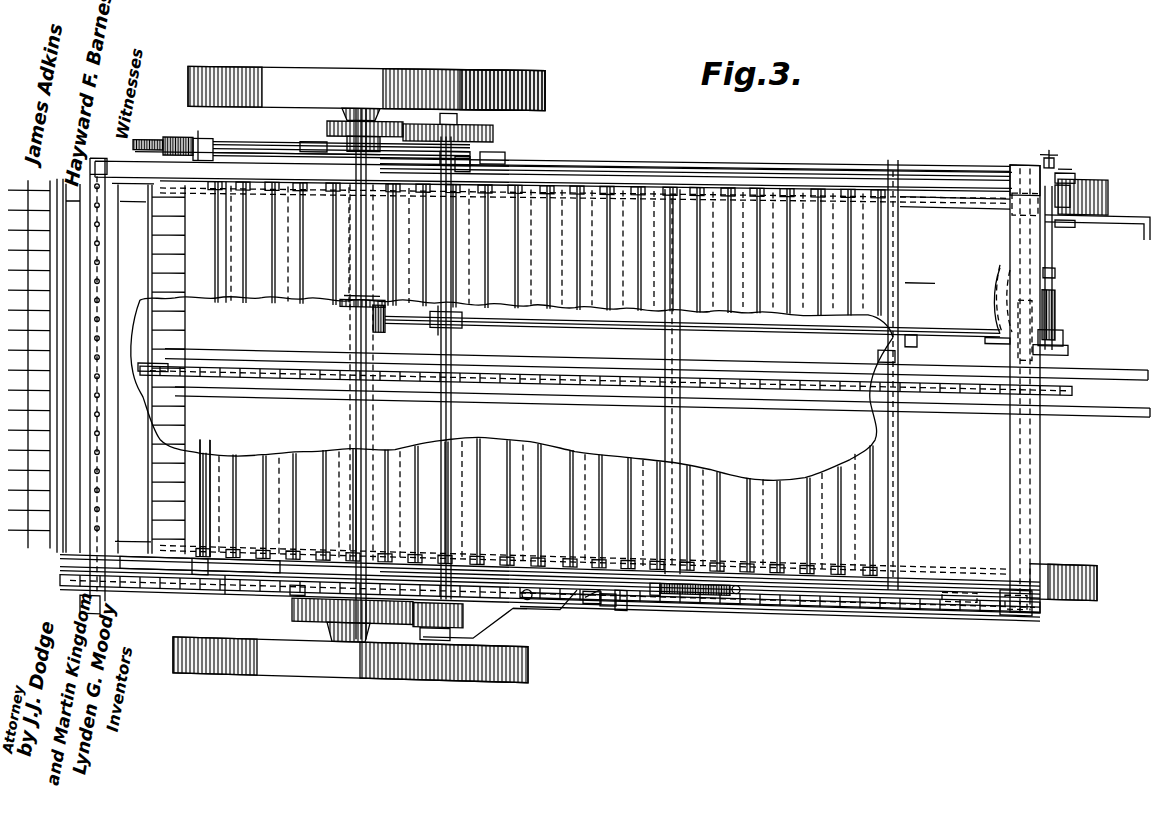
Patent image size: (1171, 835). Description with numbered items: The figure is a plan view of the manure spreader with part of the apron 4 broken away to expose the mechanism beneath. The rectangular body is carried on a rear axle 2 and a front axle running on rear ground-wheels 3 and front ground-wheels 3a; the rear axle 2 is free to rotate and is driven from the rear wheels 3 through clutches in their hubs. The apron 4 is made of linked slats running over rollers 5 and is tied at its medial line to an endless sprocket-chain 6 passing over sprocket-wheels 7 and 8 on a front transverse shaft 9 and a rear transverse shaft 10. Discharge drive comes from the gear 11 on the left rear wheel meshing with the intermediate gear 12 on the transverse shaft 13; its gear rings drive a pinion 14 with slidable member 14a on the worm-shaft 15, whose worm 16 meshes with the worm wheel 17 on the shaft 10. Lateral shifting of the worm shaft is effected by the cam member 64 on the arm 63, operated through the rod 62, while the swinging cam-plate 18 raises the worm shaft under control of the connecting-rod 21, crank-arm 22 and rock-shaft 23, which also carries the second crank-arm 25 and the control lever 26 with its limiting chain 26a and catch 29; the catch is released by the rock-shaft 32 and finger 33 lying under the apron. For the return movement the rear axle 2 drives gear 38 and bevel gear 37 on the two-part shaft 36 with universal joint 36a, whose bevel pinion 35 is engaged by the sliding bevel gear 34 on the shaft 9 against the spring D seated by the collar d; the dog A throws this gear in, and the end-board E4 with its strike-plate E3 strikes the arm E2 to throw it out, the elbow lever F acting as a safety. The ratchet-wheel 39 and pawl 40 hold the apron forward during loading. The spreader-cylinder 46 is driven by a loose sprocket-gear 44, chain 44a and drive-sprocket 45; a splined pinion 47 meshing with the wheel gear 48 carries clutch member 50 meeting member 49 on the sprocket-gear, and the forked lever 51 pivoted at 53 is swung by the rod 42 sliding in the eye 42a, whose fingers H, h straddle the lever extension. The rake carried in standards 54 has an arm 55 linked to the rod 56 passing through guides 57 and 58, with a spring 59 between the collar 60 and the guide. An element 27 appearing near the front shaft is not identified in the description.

The rear axle 2 is at (350, 323).
The rear ground-wheels 3 is at (340, 66).
The front ground-wheels 3a is at (1095, 160).
The apron 4 is at (484, 354).
The rollers 5 is at (952, 542).
The endless sprocket-chain 6 is at (862, 376).
The sprocket-wheel 7 is at (1078, 365).
The sprocket-wheel 8 is at (150, 370).
The front transverse shaft 9 is at (1055, 228).
The rear transverse shaft 10 is at (170, 308).
The gear 11 is at (327, 122).
The intermediate gear 12 is at (495, 128).
The transverse shaft 13 is at (452, 418).
The pinion 14 is at (395, 178).
The slidable member 14a is at (300, 168).
The worm-shaft 15 is at (258, 140).
The worm 16 is at (175, 134).
The worm wheel 17 is at (136, 138).
The swinging cam-plate 18 is at (212, 138).
The connecting-rod 21 is at (925, 157).
The crank-arm 22 is at (1015, 150).
The transverse rock-shaft 23 is at (1030, 492).
The second crank-arm 25 is at (1015, 580).
The manually-operated lever 26 is at (1148, 190).
The chain 26a is at (1075, 202).
The bearing block 27 is at (1010, 197).
The catch 29 is at (1068, 170).
The horizontal transverse rock-shaft 32 is at (905, 253).
The depending finger 33 is at (878, 336).
The bevel gear 34 is at (1068, 326).
The bevel pinion 35 is at (1008, 285).
The longitudinal two-part shaft 36 is at (635, 316).
The universal joint 36a is at (460, 316).
The bevel gear 37 is at (380, 324).
The gear 38 is at (340, 295).
The ratchet-wheel 39 is at (1070, 150).
The pivoted pawl 40 is at (1050, 133).
The connecting-rod 42 is at (878, 580).
The eye 42a is at (624, 593).
The loose sprocket-gear 44 is at (505, 560).
The chain 44a is at (238, 584).
The drive-sprocket 45 is at (90, 606).
The spreader-cylinder 46 is at (58, 540).
The sliding splined pinion 47 is at (400, 615).
The driving-gear 48 is at (290, 590).
The clutch member 49 is at (478, 557).
The clutch member 50 is at (430, 630).
The forked horizontally-shiftable lever 51 is at (490, 620).
The swinging rake 53 is at (530, 592).
The standards 54 is at (195, 569).
The depending operating arm 55 is at (225, 569).
The rod 56 is at (815, 580).
The guide 57 is at (965, 576).
The guide 58 is at (656, 578).
The spiral spring 59 is at (715, 576).
The collar 60 is at (737, 574).
The rod 62 is at (575, 156).
The arm 63 is at (525, 156).
The cam member 64 is at (500, 88).
The dog A is at (1020, 338).
The spiral spring D is at (1065, 308).
The collar d is at (1056, 250).
The longer arm E2 is at (985, 319).
The strike-plate E3 is at (919, 348).
The end-board E4 is at (908, 280).
The elbow lever F is at (990, 293).
The depending finger H is at (603, 590).
The hook pin h is at (598, 587).